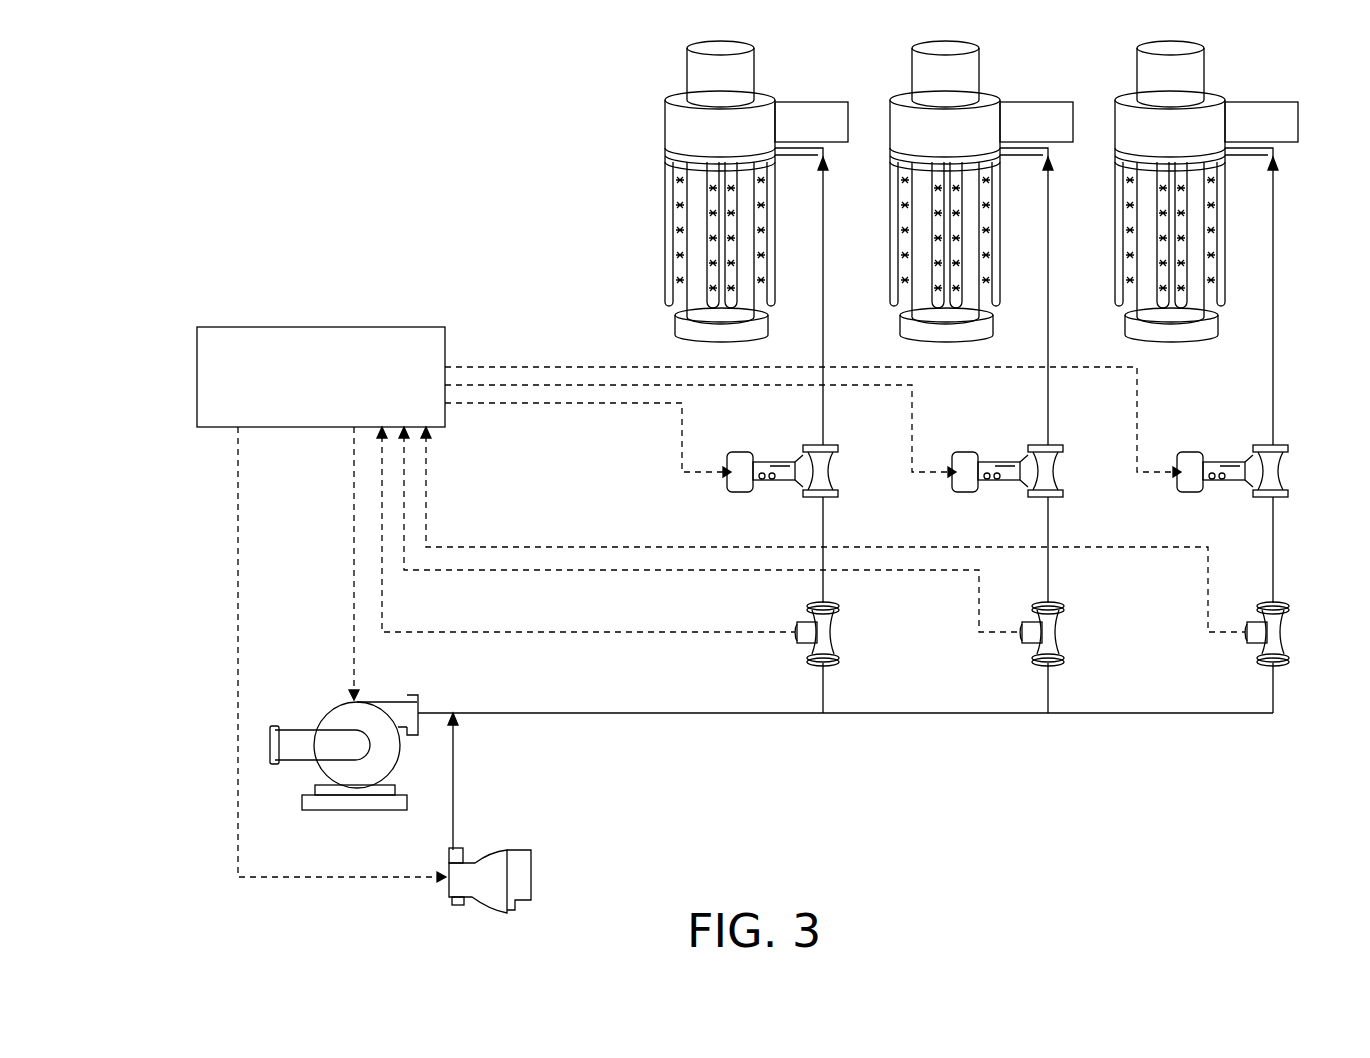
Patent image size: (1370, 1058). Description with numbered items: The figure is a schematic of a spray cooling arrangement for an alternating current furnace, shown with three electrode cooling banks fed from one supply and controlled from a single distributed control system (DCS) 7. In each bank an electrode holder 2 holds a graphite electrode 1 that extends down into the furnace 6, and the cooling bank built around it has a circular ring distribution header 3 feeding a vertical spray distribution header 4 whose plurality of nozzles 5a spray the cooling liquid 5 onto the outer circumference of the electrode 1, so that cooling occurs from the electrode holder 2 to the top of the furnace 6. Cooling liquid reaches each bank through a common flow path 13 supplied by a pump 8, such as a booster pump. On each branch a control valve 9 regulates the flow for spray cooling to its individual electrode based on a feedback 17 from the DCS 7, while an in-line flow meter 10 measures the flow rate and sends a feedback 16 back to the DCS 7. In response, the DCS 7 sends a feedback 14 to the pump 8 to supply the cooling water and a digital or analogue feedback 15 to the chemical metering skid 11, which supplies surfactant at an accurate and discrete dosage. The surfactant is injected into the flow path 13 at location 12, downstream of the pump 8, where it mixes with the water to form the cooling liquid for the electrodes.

The graphite electrode 1 is at (687, 56).
The electrode holder 2 is at (665, 120).
The circular ring distribution header 3 is at (666, 152).
The vertical spray distribution header 4 is at (665, 229).
The cooling liquid 5 is at (687, 292).
The nozzles 5a is at (680, 290).
The furnace 6 is at (675, 326).
The distributed control system (DCS) 7 is at (412, 326).
The pump 8 is at (337, 712).
The control valve 9 is at (1288, 468).
The in-line flow meter 10 is at (1286, 619).
The chemical metering skid 11 is at (527, 848).
The location 12 is at (455, 768).
The flow path 13 is at (468, 713).
The feedback 14 is at (354, 530).
The feedback 15 is at (238, 590).
The feedback 16 is at (475, 547).
The feedback 17 is at (610, 405).